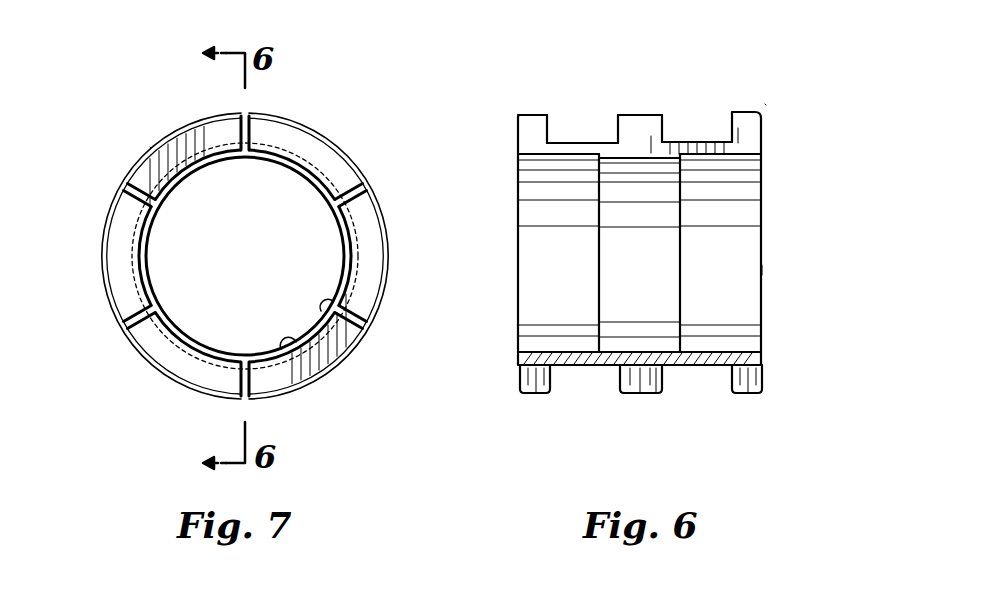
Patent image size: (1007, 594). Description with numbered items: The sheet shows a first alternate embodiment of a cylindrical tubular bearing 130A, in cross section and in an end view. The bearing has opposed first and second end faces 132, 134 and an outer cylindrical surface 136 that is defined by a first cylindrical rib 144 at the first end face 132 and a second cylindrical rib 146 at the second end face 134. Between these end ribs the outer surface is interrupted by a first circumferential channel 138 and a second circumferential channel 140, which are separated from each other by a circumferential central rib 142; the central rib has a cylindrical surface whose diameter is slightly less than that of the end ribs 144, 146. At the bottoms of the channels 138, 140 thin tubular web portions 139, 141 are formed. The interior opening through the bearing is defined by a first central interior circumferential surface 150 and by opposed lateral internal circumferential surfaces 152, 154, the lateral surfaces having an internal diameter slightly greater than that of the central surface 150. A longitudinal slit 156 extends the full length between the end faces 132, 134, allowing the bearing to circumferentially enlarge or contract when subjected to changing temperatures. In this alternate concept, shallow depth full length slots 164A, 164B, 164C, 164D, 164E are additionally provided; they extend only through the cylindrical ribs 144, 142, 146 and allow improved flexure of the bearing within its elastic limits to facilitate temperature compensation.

In FIG. 7, the bearing 130A is at (152, 149).
In FIG. 6, the bearing 130A is at (766, 107).
In FIG. 7, the first end face 132 is at (161, 341).
In FIG. 6, the first end face 132 is at (517, 247).
In FIG. 6, the second end face 134 is at (764, 270).
In FIG. 7, the outer cylindrical surface 136 is at (313, 129).
In FIG. 6, the outer cylindrical surface 136 is at (740, 111).
In FIG. 6, the first circumferential channel 138 is at (687, 141).
In FIG. 6, the tubular web portion 139 is at (700, 154).
In FIG. 6, the second circumferential channel 140 is at (576, 142).
In FIG. 6, the tubular web portion 141 is at (570, 148).
In FIG. 6, the circumferential central rib 142 is at (615, 116).
In FIG. 6, the first cylindrical rib 144 is at (517, 125).
In FIG. 6, the second cylindrical rib 146 is at (763, 128).
In FIG. 7, the first central interior circumferential surface 150 is at (324, 305).
In FIG. 6, the first central interior circumferential surface 150 is at (650, 351).
In FIG. 7, the lateral internal circumferential surface 152 is at (290, 340).
In FIG. 6, the lateral internal circumferential surface 152 is at (560, 352).
In FIG. 6, the lateral internal circumferential surface 154 is at (740, 346).
In FIG. 7, the longitudinal slit 156 is at (243, 116).
In FIG. 6, the longitudinal slit 156 is at (639, 126).
In FIG. 7, the shallow depth full length slot 164A is at (365, 187).
In FIG. 7, the shallow depth full length slot 164B is at (372, 324).
In FIG. 7, the shallow depth full length slot 164C is at (244, 400).
In FIG. 6, the shallow depth full length slot 164C is at (746, 395).
In FIG. 7, the shallow depth full length slot 164D is at (122, 328).
In FIG. 7, the shallow depth full length slot 164E is at (128, 184).